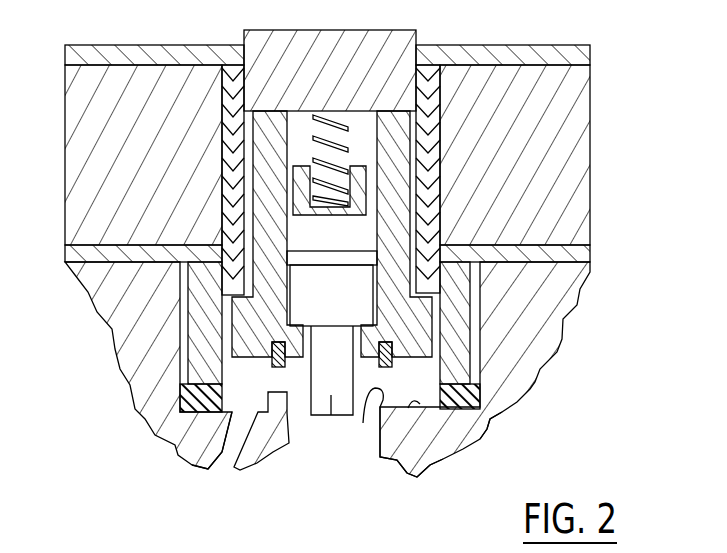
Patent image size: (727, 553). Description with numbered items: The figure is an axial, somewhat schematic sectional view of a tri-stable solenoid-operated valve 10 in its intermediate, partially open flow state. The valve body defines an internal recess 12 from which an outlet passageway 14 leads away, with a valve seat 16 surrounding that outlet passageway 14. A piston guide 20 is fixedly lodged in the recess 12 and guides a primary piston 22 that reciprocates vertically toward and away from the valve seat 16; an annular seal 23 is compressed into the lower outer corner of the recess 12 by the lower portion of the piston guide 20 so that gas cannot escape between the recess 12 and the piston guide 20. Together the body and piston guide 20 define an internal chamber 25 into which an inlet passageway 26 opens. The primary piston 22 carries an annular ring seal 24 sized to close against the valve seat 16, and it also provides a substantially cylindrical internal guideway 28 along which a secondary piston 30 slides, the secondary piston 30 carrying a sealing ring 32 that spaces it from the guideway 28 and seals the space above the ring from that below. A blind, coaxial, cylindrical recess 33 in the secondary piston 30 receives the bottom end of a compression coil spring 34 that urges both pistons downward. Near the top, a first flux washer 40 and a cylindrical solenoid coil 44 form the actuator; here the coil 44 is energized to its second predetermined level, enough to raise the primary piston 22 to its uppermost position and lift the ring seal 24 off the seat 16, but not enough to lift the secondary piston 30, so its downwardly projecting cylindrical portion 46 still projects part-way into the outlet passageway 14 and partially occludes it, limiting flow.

The tri-stable solenoid-operated valve 10 is at (556, 391).
The internal recess 12 is at (438, 410).
The outlet passageway 14 is at (288, 418).
The valve seat 16 is at (332, 417).
The piston guide 20 is at (457, 300).
The primary piston 22 is at (397, 177).
The annular seal 23 is at (487, 421).
The annular ring seal 24 is at (396, 342).
The internal chamber 25 is at (426, 394).
The inlet passageway 26 is at (230, 455).
The internal guideway 28 is at (288, 133).
The secondary piston 30 is at (310, 368).
The sealing ring 32 is at (329, 258).
The cylindrical recess 33 is at (329, 206).
The compression coil spring 34 is at (330, 115).
The first flux washer 40 is at (590, 53).
The solenoid coil 44 is at (573, 155).
The cylindrical portion 46 is at (331, 415).